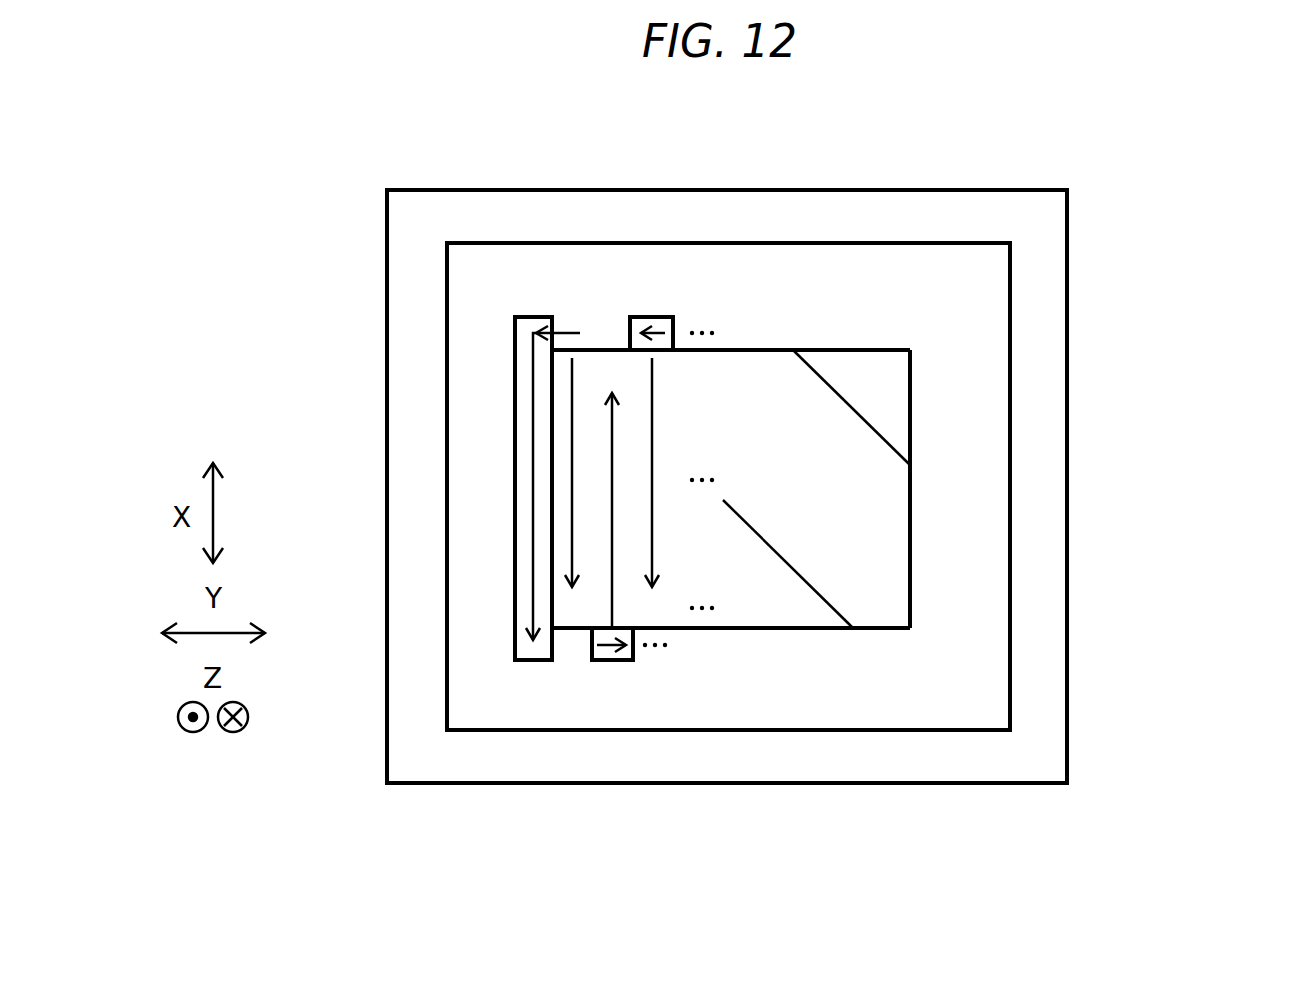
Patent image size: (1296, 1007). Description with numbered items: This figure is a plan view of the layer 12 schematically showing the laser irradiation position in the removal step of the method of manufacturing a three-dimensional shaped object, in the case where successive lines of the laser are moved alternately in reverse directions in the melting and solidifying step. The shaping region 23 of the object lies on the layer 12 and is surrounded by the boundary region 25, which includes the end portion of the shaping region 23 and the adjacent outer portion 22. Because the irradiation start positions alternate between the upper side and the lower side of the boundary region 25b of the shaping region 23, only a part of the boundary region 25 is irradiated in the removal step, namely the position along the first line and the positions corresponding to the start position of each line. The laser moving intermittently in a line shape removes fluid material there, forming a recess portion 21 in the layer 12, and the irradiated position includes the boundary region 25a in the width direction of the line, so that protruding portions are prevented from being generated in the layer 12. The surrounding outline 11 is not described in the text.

The substrate 11 is at (1053, 220).
The layer 12 is at (988, 270).
The recess portion 21 is at (449, 478).
The outer portion 22 is at (592, 653).
The shaping region 23 is at (737, 483).
The boundary region 25 is at (737, 483).
The boundary region in the width direction of the line 25a is at (502, 628).
The boundary region on the upper and lower side 25b is at (754, 614).